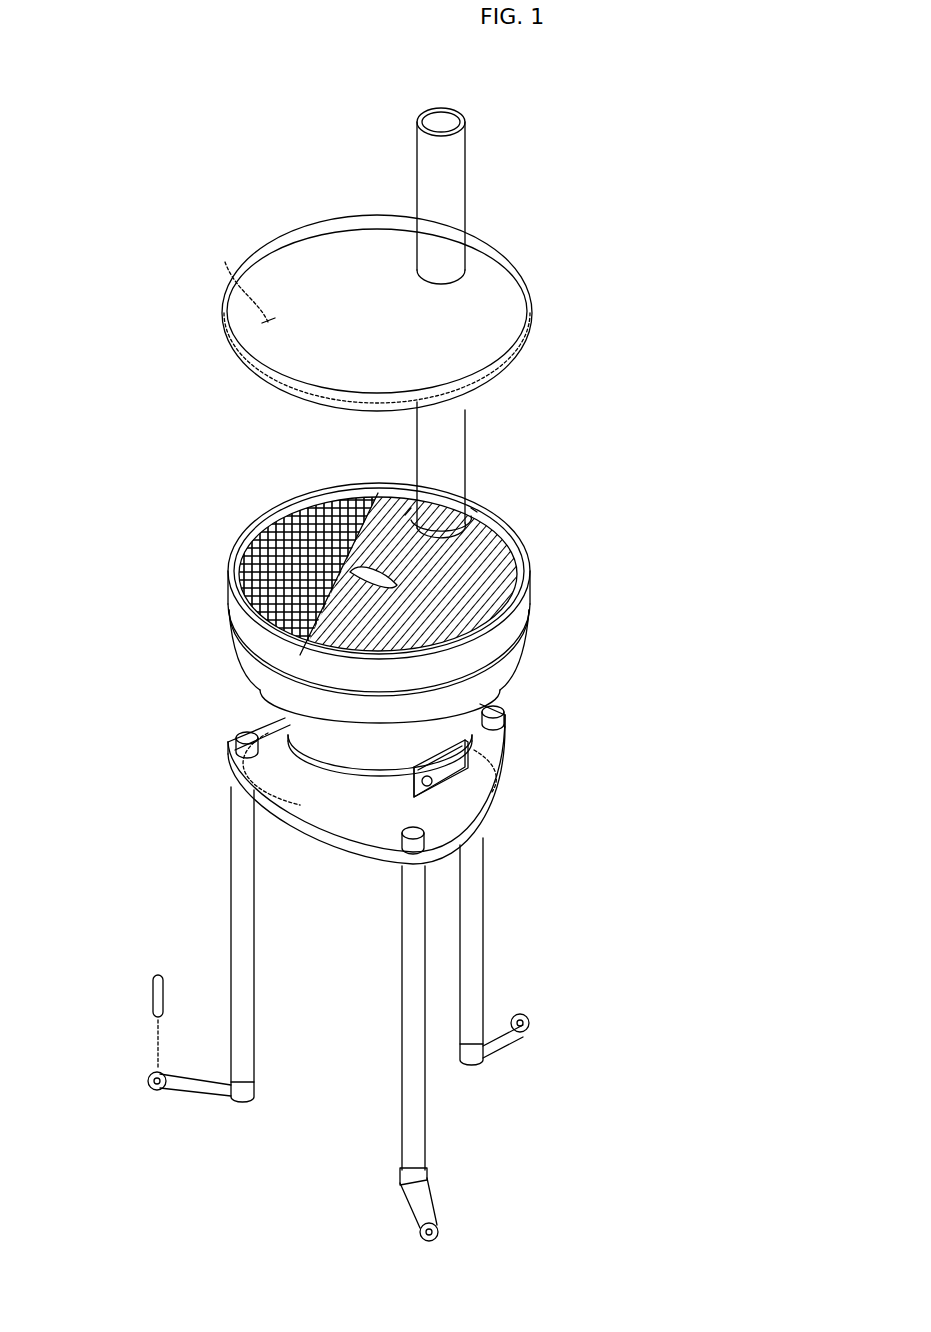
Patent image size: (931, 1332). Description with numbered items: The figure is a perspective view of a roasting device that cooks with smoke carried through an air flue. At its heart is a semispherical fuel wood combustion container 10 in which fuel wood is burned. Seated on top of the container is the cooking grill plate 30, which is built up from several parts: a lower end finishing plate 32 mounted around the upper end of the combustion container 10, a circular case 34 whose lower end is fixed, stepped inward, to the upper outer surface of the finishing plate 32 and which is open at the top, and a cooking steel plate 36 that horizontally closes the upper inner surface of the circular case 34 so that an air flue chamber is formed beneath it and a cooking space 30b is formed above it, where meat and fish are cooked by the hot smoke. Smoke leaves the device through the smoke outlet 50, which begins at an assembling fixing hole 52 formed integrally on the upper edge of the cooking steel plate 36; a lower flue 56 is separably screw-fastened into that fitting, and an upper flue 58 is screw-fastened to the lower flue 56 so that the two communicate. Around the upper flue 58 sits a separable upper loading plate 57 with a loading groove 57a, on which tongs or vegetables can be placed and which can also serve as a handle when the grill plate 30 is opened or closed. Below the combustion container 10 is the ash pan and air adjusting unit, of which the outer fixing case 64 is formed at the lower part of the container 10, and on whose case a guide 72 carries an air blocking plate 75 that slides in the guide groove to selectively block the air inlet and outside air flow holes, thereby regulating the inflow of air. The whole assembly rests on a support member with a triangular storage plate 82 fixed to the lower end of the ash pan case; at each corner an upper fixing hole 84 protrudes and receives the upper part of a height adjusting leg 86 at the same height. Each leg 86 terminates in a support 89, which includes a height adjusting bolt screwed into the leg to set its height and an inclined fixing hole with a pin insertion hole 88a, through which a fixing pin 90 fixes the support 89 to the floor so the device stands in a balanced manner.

The fuel wood combustion container 10 is at (265, 692).
The cooking grill plate 30 is at (389, 573).
The cooking space 30b is at (272, 500).
The lower end finishing plate 32 is at (520, 640).
The circular case 34 is at (520, 606).
The cooking steel plate 36 is at (235, 540).
The smoke outlet 50 is at (500, 417).
The assembling fixing hole 52 is at (483, 515).
The lower flue 56 is at (455, 457).
The upper loading plate 57 is at (500, 348).
The loading groove 57a is at (225, 262).
The upper flue 58 is at (456, 181).
The outer fixing case 64 is at (328, 765).
The guide 72 is at (455, 782).
The air blocking plate 75 is at (497, 748).
The triangular storage plate 82 is at (373, 787).
The upper fixing hole 84 is at (250, 760).
The height adjusting leg 86 is at (416, 908).
The pin insertion hole 88a is at (150, 1095).
The support 89 is at (512, 1055).
The fixing pin 90 is at (150, 995).